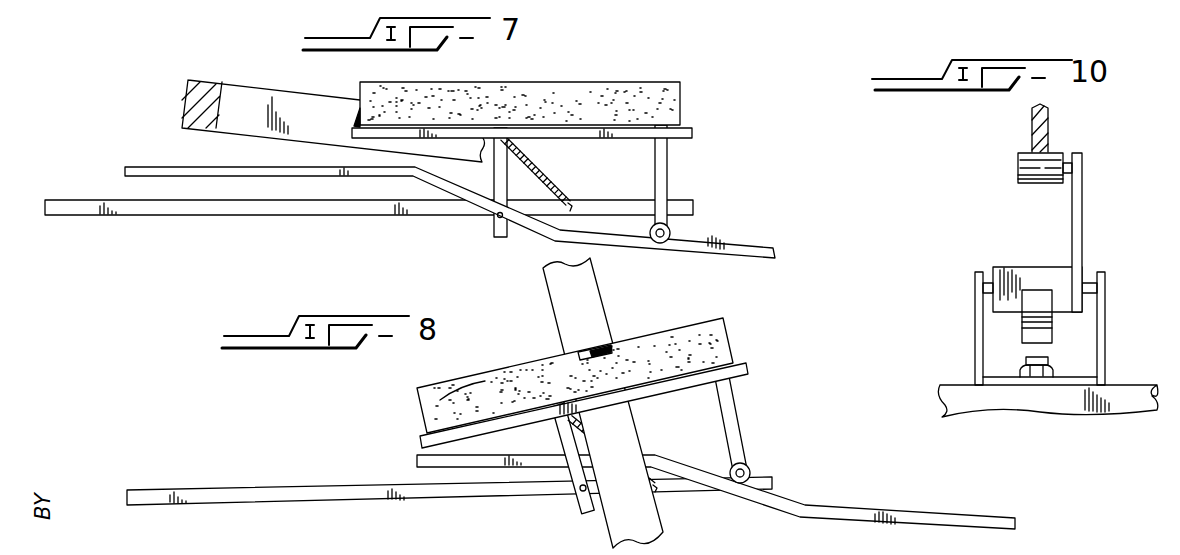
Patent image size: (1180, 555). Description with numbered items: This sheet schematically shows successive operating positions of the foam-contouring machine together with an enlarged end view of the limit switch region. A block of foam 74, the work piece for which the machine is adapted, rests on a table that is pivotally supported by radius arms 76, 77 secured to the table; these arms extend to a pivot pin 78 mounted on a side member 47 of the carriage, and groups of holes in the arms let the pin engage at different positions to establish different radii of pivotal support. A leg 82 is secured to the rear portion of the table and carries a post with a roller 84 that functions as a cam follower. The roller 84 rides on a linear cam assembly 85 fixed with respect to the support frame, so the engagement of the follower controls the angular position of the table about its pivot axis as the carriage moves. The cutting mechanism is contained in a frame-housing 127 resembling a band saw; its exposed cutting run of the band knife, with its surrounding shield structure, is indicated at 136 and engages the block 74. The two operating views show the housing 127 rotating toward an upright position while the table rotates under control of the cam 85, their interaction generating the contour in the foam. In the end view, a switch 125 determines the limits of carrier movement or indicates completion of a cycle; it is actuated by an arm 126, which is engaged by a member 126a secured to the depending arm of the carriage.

In FIG. 8, the side member 47 is at (293, 500).
In FIG. 7, the block of foam 74 is at (682, 107).
In FIG. 8, the block of foam 74 is at (733, 340).
In FIG. 7, the radius arm 76 is at (493, 183).
In FIG. 8, the radius arm 76 is at (557, 442).
In FIG. 7, the radius arm 77 is at (250, 217).
In FIG. 7, the pivot pin 78 is at (510, 223).
In FIG. 8, the pivot pin 78 is at (580, 495).
In FIG. 7, the leg 82 is at (661, 180).
In FIG. 8, the leg 82 is at (737, 415).
In FIG. 7, the roller 84 is at (670, 232).
In FIG. 8, the roller 84 is at (750, 468).
In FIG. 7, the linear cam assembly 85 is at (743, 242).
In FIG. 8, the linear cam assembly 85 is at (833, 508).
In FIG. 10, the switch 125 is at (1113, 395).
In FIG. 10, the arm 126 is at (1078, 222).
In FIG. 10, the member 126a is at (1050, 130).
In FIG. 7, the frame-housing 127 is at (234, 83).
In FIG. 8, the frame-housing 127 is at (602, 297).
In FIG. 7, the cutting course of the band knife 136 is at (353, 117).
In FIG. 8, the cutting course of the band knife 136 is at (592, 348).